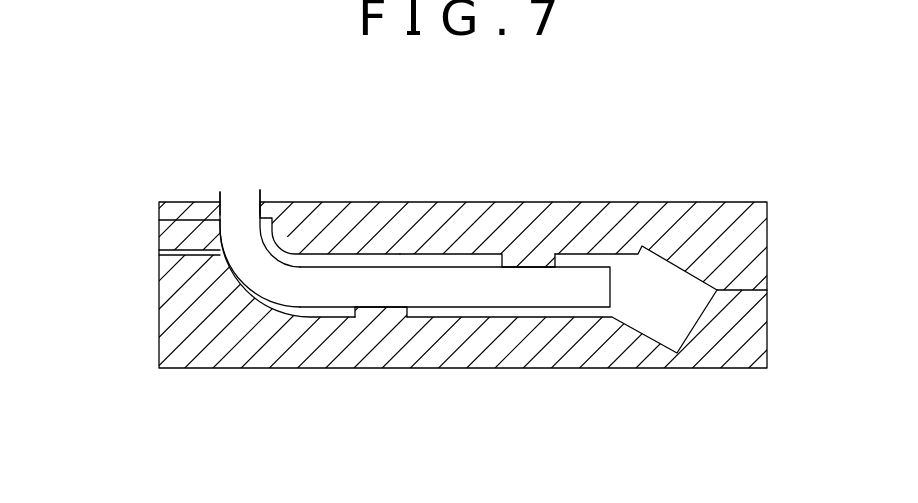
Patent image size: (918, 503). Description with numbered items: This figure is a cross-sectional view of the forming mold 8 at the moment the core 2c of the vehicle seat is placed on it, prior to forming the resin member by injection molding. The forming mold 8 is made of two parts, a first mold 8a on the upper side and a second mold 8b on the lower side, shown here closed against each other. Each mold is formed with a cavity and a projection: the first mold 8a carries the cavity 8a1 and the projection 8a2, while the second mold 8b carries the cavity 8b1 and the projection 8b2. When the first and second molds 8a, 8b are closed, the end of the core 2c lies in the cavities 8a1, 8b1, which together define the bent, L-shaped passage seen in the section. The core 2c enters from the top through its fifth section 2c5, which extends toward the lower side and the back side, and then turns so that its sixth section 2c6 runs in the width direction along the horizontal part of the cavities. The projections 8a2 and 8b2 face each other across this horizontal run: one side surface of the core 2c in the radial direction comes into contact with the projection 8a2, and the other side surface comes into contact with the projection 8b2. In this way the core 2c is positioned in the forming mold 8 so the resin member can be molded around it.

The forming mold 8 is at (188, 197).
The first mold 8a is at (440, 200).
The cavity 8a1 is at (450, 260).
The projection 8a2 is at (537, 261).
The second mold 8b is at (306, 373).
The cavity 8b1 is at (252, 304).
The projection 8b2 is at (367, 312).
The core 2c is at (262, 198).
The fifth section 2c5 is at (237, 213).
The sixth section 2c6 is at (532, 293).